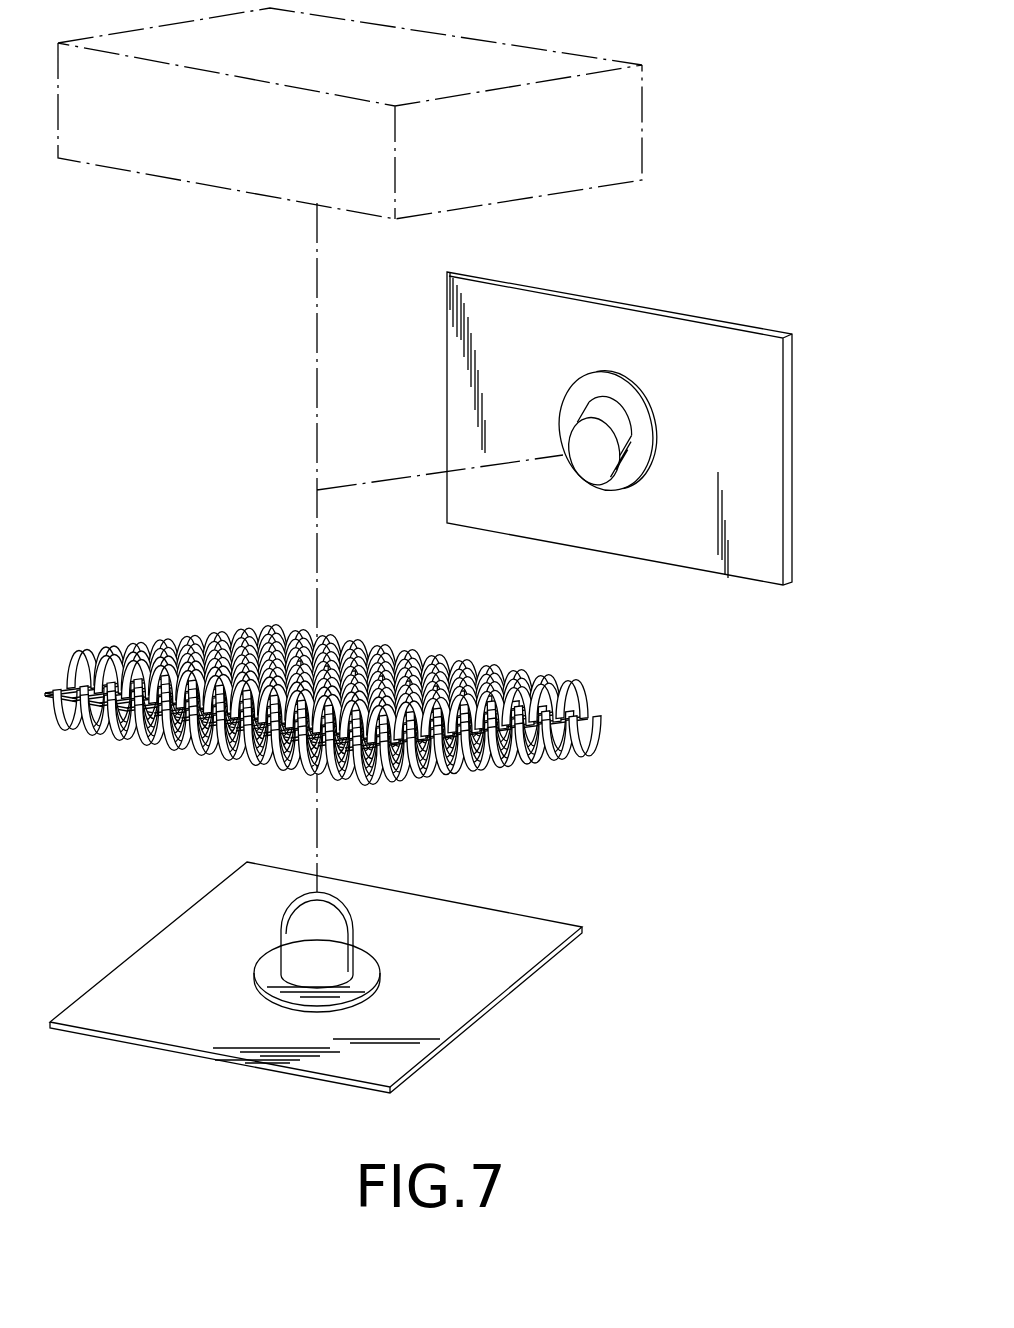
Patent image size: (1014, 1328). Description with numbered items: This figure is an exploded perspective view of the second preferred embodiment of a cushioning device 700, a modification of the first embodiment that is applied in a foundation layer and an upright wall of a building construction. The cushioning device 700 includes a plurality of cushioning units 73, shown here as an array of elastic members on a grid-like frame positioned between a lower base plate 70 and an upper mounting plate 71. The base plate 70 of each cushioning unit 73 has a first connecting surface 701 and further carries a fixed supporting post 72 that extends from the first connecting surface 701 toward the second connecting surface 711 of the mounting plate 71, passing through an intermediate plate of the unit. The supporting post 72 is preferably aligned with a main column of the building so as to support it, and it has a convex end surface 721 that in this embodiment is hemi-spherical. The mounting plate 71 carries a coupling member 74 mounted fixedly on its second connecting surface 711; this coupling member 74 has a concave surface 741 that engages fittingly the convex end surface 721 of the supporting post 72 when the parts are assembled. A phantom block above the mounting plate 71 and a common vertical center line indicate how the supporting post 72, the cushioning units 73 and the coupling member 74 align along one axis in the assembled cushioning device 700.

The cushioning device 700 is at (455, 550).
The base plate 70 is at (321, 965).
The first connecting surface 701 is at (490, 913).
The supporting post 72 is at (351, 924).
The convex end surface 721 is at (319, 897).
The cushioning unit 73 is at (598, 768).
The mounting plate 71 is at (656, 428).
The second connecting surface 711 is at (764, 482).
The coupling member 74 is at (591, 448).
The concave surface 741 is at (582, 458).